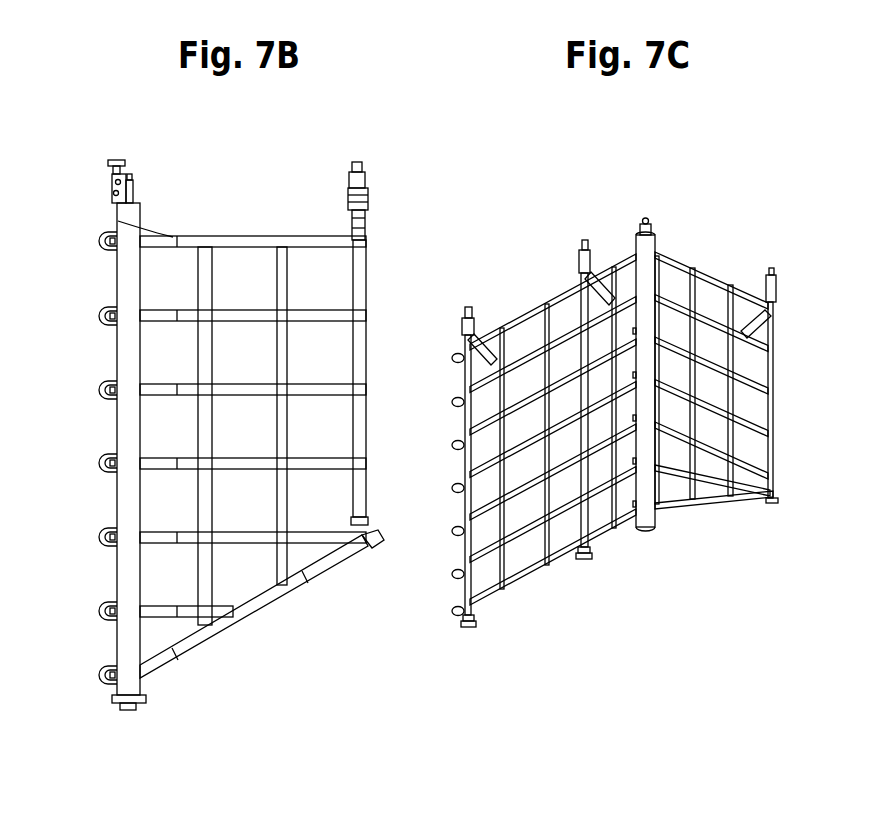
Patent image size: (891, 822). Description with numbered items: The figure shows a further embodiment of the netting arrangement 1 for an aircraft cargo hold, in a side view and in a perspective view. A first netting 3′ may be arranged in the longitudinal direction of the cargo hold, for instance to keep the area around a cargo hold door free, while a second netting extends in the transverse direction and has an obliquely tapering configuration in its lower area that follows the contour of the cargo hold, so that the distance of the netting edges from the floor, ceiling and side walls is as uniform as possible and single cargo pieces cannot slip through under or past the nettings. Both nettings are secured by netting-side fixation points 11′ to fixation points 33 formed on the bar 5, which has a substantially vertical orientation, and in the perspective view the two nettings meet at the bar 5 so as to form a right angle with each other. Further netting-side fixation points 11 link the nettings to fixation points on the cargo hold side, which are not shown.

In FIG. 7C, the netting arrangement 1 is at (628, 434).
In FIG. 7B, the first netting 3′ is at (118, 586).
In FIG. 7C, the first netting 3′ is at (562, 297).
In FIG. 7B, the bar 5 is at (0, 258).
In FIG. 7C, the bar 5 is at (647, 250).
In FIG. 7B, the netting-side fixation points 11 is at (365, 173).
In FIG. 7C, the netting-side fixation points 11 is at (456, 612).
In FIG. 7B, the netting-side fixation points 11′ is at (100, 389).
In FIG. 7B, the fixation points 33 is at (100, 465).